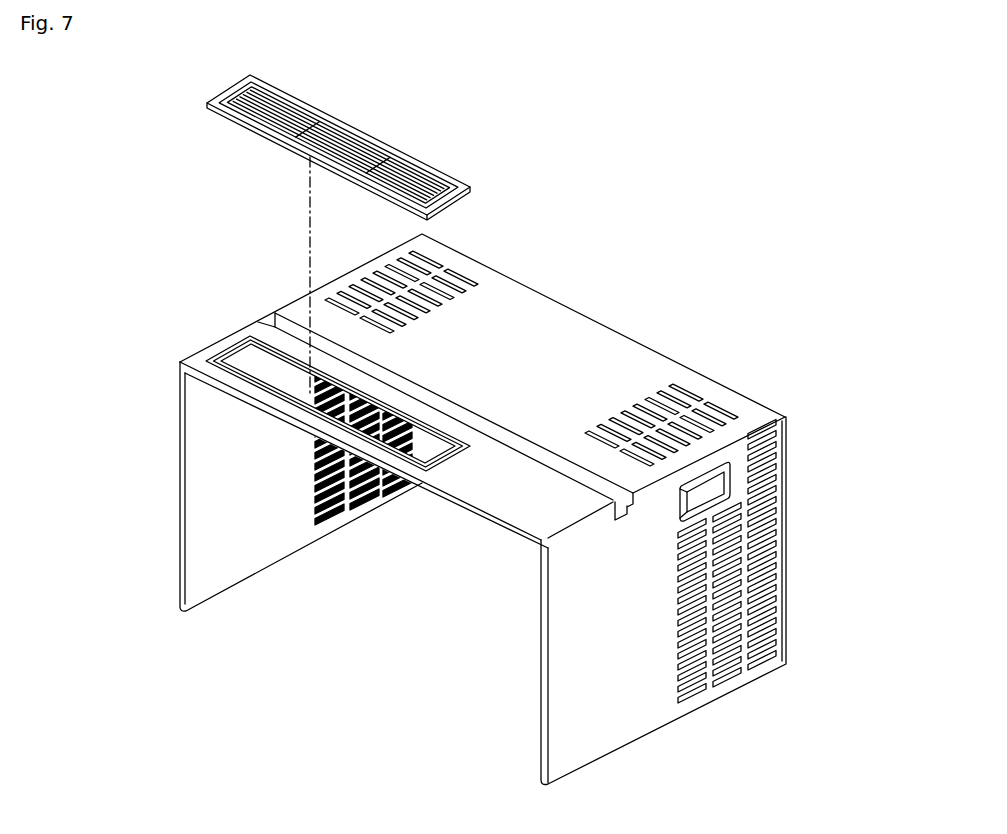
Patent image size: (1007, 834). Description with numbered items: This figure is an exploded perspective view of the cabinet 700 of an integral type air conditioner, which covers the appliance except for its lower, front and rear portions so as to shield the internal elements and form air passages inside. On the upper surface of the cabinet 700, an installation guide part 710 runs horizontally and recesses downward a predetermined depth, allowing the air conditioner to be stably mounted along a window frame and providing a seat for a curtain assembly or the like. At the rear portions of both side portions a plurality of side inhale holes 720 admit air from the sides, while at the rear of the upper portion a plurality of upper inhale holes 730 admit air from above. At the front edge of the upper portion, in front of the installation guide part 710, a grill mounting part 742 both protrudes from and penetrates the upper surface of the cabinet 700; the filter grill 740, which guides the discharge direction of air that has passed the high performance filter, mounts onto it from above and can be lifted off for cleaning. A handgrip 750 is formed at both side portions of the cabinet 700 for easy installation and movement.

The cabinet 700 is at (155, 417).
The installation guide part 710 is at (460, 410).
The side inhale holes 720 is at (772, 548).
The upper inhale holes 730 is at (680, 397).
The filter grill 740 is at (362, 137).
The grill mounting part 742 is at (237, 356).
The handgrip 750 is at (717, 483).